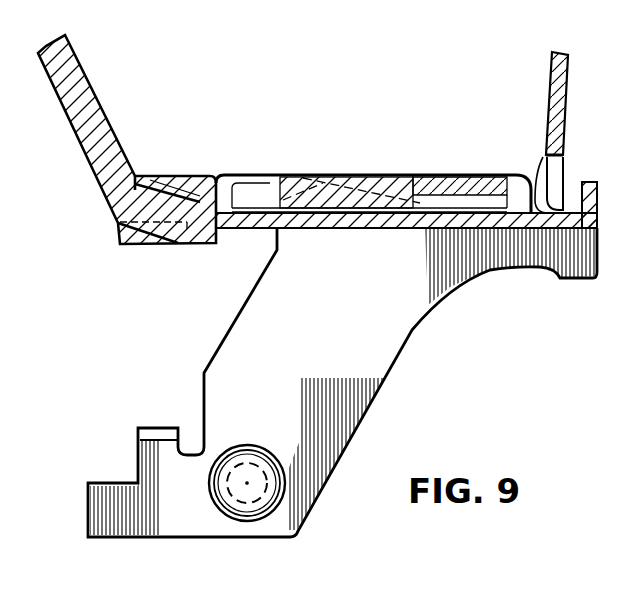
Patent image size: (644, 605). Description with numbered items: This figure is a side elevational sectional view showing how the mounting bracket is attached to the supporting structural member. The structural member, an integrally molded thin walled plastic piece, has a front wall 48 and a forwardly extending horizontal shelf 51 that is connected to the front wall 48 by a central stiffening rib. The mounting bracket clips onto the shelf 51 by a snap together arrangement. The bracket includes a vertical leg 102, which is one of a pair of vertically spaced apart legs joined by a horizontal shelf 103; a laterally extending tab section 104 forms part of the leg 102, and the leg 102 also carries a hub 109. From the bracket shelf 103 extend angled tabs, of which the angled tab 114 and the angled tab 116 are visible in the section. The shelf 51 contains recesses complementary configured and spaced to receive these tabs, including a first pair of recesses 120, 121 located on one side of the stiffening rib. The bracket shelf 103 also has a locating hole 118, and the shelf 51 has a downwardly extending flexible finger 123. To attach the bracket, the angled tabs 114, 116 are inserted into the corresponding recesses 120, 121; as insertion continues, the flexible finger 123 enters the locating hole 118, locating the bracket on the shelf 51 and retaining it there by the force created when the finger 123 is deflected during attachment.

The front wall section 48 is at (100, 126).
The angled tab 114 is at (204, 184).
The recess 120 is at (248, 183).
The flexible finger 123 is at (327, 195).
The horizontal shelf 51 is at (393, 183).
The angled tab 116 is at (503, 180).
The recess 121 is at (548, 163).
The locating hole 118 is at (382, 226).
The horizontal shelf 103 is at (262, 243).
The vertical leg 102 is at (370, 343).
The tab section 104 is at (158, 430).
The hub 109 is at (262, 488).